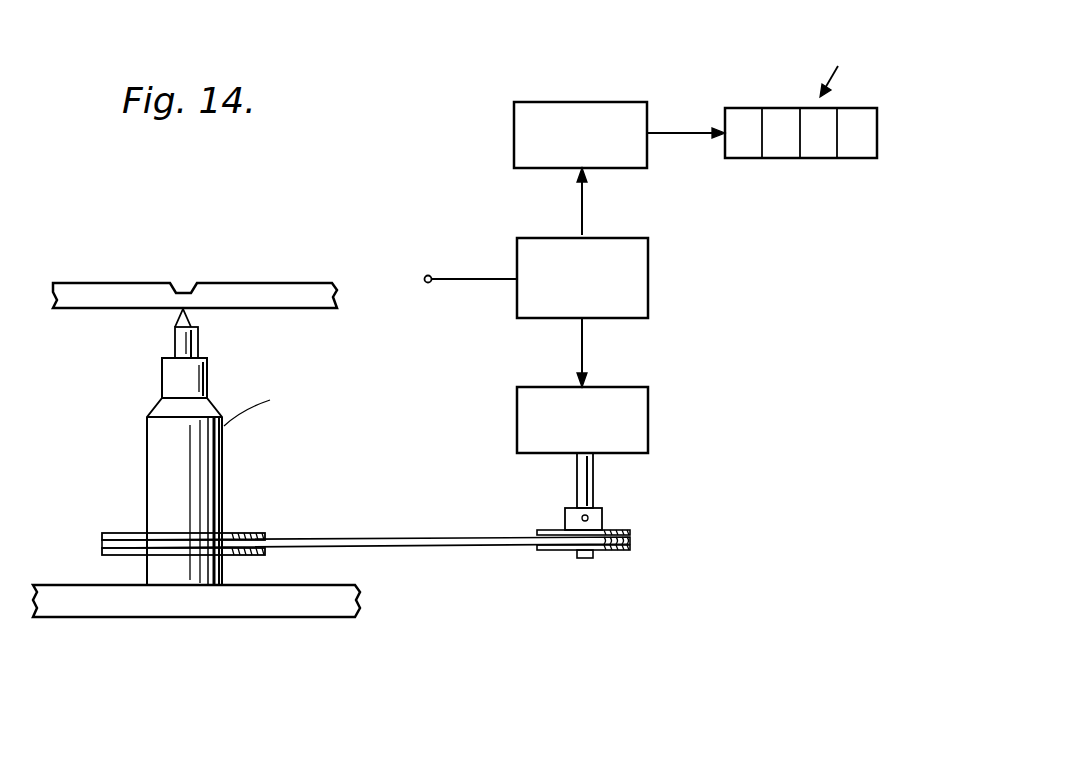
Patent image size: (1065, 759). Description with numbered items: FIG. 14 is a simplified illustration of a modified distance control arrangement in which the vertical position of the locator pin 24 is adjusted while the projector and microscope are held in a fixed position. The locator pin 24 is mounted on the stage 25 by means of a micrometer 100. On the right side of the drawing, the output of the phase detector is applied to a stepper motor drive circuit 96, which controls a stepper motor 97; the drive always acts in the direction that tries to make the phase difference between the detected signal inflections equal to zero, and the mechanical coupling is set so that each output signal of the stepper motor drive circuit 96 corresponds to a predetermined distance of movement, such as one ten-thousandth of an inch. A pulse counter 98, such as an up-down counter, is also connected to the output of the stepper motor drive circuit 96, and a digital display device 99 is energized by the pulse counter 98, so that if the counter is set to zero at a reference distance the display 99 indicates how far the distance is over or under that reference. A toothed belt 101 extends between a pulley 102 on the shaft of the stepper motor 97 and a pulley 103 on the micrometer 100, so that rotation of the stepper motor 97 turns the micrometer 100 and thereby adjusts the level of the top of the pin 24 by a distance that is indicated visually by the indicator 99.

The locator pin 24 is at (175, 338).
The stage 25 is at (250, 600).
The stepper motor drive circuit 96 is at (650, 278).
The stepper motor 97 is at (650, 414).
The pulse counter 98 is at (513, 143).
The digital display device 99 is at (826, 160).
The micrometer 100 is at (154, 482).
The toothed belt 101 is at (434, 542).
The pulley 102 is at (620, 551).
The pulley 103 is at (246, 528).